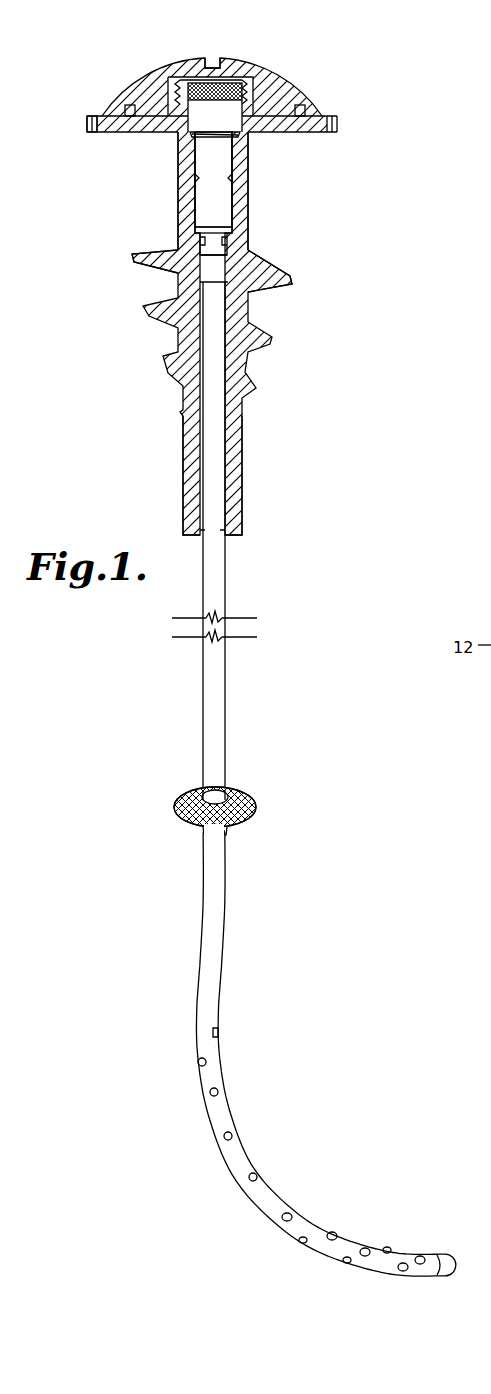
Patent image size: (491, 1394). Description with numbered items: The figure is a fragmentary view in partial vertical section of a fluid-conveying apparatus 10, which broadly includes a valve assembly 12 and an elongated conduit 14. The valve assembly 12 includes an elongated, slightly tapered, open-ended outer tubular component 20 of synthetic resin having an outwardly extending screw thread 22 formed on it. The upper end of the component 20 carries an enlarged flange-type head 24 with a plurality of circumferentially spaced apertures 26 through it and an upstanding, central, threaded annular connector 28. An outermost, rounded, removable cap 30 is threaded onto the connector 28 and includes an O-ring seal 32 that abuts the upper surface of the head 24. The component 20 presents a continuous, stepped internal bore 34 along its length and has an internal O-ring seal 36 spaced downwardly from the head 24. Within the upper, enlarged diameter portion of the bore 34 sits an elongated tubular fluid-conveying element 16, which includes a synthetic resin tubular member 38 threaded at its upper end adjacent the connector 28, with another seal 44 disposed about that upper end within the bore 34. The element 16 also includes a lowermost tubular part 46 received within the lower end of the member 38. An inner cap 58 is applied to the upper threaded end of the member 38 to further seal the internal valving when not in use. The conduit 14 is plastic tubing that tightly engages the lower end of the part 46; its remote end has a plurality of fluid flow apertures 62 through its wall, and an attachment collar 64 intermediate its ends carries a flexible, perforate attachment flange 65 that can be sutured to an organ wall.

The conveying apparatus 10 is at (352, 62).
The valve assembly 12 is at (155, 357).
The elongated conduit 14 is at (227, 705).
The tubular fluid-conveying element 16 is at (187, 195).
The outer tubular component 20 is at (186, 470).
The screw thread 22 is at (293, 281).
The flange-type head 24 is at (293, 136).
The apertures 26 is at (96, 130).
The threaded annular connector 28 is at (256, 90).
The removable cap 30 is at (134, 84).
The O-ring seal 32 is at (305, 102).
The internal bore 34 is at (226, 222).
The internal O-ring seal 36 is at (190, 178).
The tubular member 38 is at (225, 190).
The seal 44 is at (238, 138).
The lowermost tubular part 46 is at (210, 243).
The inner cap 58 is at (218, 80).
The fluid flow apertures 62 is at (291, 1210).
The attachment collar 64 is at (217, 837).
The attachment flange 65 is at (180, 797).